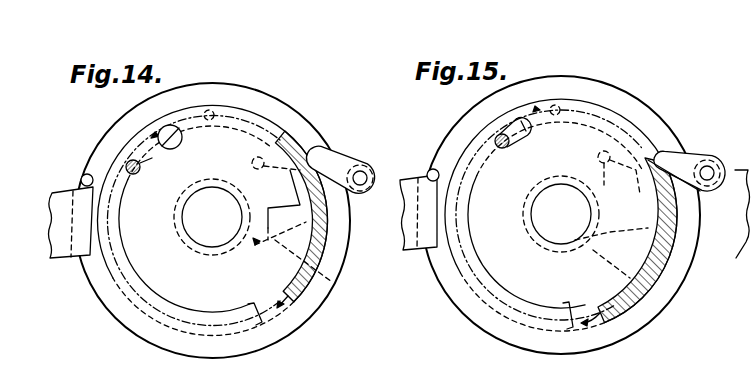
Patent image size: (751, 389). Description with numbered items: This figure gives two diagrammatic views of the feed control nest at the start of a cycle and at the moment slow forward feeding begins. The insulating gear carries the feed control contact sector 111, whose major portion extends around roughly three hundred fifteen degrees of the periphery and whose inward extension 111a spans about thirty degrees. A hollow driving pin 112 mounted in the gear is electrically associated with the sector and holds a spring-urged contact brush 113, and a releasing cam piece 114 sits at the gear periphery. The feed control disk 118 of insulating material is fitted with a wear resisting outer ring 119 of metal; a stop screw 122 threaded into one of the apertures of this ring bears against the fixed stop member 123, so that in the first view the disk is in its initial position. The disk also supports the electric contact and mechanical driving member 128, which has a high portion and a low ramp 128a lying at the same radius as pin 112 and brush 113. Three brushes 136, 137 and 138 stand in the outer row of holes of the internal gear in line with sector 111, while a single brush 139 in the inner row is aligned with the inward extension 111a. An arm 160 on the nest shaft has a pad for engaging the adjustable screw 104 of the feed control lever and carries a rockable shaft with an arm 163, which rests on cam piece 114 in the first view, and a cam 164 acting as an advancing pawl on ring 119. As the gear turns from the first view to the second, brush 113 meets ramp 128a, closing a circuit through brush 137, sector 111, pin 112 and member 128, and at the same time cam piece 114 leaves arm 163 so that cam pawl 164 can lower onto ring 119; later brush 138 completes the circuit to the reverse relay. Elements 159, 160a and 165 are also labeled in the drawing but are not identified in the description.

In FIG. 14, the adjustable screw 104 is at (338, 293).
In FIG. 15, the adjustable screw 104 is at (674, 279).
In FIG. 14, the feed control contact sector 111 is at (256, 128).
In FIG. 15, the feed control contact sector 111 is at (631, 140).
In FIG. 14, the inward extension 111a is at (255, 246).
In FIG. 15, the inward extension 111a is at (593, 250).
In FIG. 14, the hollow driving pin 112 is at (159, 160).
In FIG. 15, the hollow driving pin 112 is at (496, 144).
In FIG. 14, the contact brush 113 is at (131, 174).
In FIG. 15, the contact brush 113 is at (499, 148).
In FIG. 14, the releasing cam piece 114 is at (324, 256).
In FIG. 15, the releasing cam piece 114 is at (613, 315).
In FIG. 14, the feed control disk 118 is at (280, 328).
In FIG. 15, the feed control disk 118 is at (652, 305).
In FIG. 14, the wear resisting outer ring 119 is at (333, 359).
In FIG. 14, the stop screw 122 is at (84, 174).
In FIG. 15, the stop screw 122 is at (430, 170).
In FIG. 14, the fixed stop member 123 is at (53, 195).
In FIG. 15, the fixed stop member 123 is at (416, 244).
In FIG. 14, the electric contact and mechanical driving member 128 is at (176, 132).
In FIG. 15, the electric contact and mechanical driving member 128 is at (525, 131).
In FIG. 14, the ramp 128a is at (165, 129).
In FIG. 15, the ramp 128a is at (508, 128).
In FIG. 14, the brush 136 is at (212, 110).
In FIG. 15, the brush 136 is at (556, 106).
In FIG. 14, the brush 137 is at (345, 221).
In FIG. 14, the brush 138 is at (296, 278).
In FIG. 15, the brush 139 is at (615, 172).
In FIG. 14, the hole 159 is at (276, 174).
In FIG. 14, the arm 160 is at (351, 191).
In FIG. 15, the arm 160 is at (704, 194).
In FIG. 14, the pitch circle 160a is at (226, 206).
In FIG. 15, the pitch circle 160a is at (602, 148).
In FIG. 14, the arm 163 is at (341, 150).
In FIG. 15, the arm 163 is at (686, 152).
In FIG. 14, the cam 164 is at (373, 160).
In FIG. 15, the cam 164 is at (709, 158).
In FIG. 14, the arm end 165 is at (329, 152).
In FIG. 15, the arm end 165 is at (660, 157).